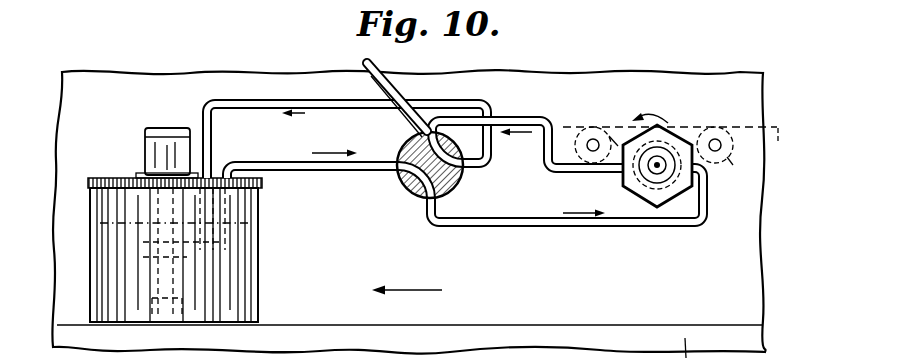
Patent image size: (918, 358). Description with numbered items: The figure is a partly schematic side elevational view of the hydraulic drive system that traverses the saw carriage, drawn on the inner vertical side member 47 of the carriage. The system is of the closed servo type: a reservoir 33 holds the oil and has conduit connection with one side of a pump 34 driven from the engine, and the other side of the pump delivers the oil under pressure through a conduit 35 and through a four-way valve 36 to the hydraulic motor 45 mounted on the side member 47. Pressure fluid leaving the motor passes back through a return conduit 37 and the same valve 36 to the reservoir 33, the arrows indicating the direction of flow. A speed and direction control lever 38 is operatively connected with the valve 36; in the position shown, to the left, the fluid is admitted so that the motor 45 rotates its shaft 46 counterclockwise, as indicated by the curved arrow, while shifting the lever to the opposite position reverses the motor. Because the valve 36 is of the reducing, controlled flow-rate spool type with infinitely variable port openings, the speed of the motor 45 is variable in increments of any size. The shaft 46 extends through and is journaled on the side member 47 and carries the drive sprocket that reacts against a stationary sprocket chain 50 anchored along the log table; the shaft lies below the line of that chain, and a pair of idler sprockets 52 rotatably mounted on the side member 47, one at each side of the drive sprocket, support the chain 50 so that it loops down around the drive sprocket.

The reservoir 33 is at (253, 253).
The pump 34 is at (150, 250).
The conduit 35 is at (354, 168).
The four-way valve 36 is at (461, 185).
The return conduit 37 is at (432, 101).
The speed and direction control lever 38 is at (362, 65).
The hydraulic motor 45 is at (633, 183).
The motor shaft 46 is at (657, 165).
The inner vertical side member 47 is at (678, 88).
The stationary sprocket chain 50 is at (679, 146).
The idler sprockets 52 is at (593, 128).